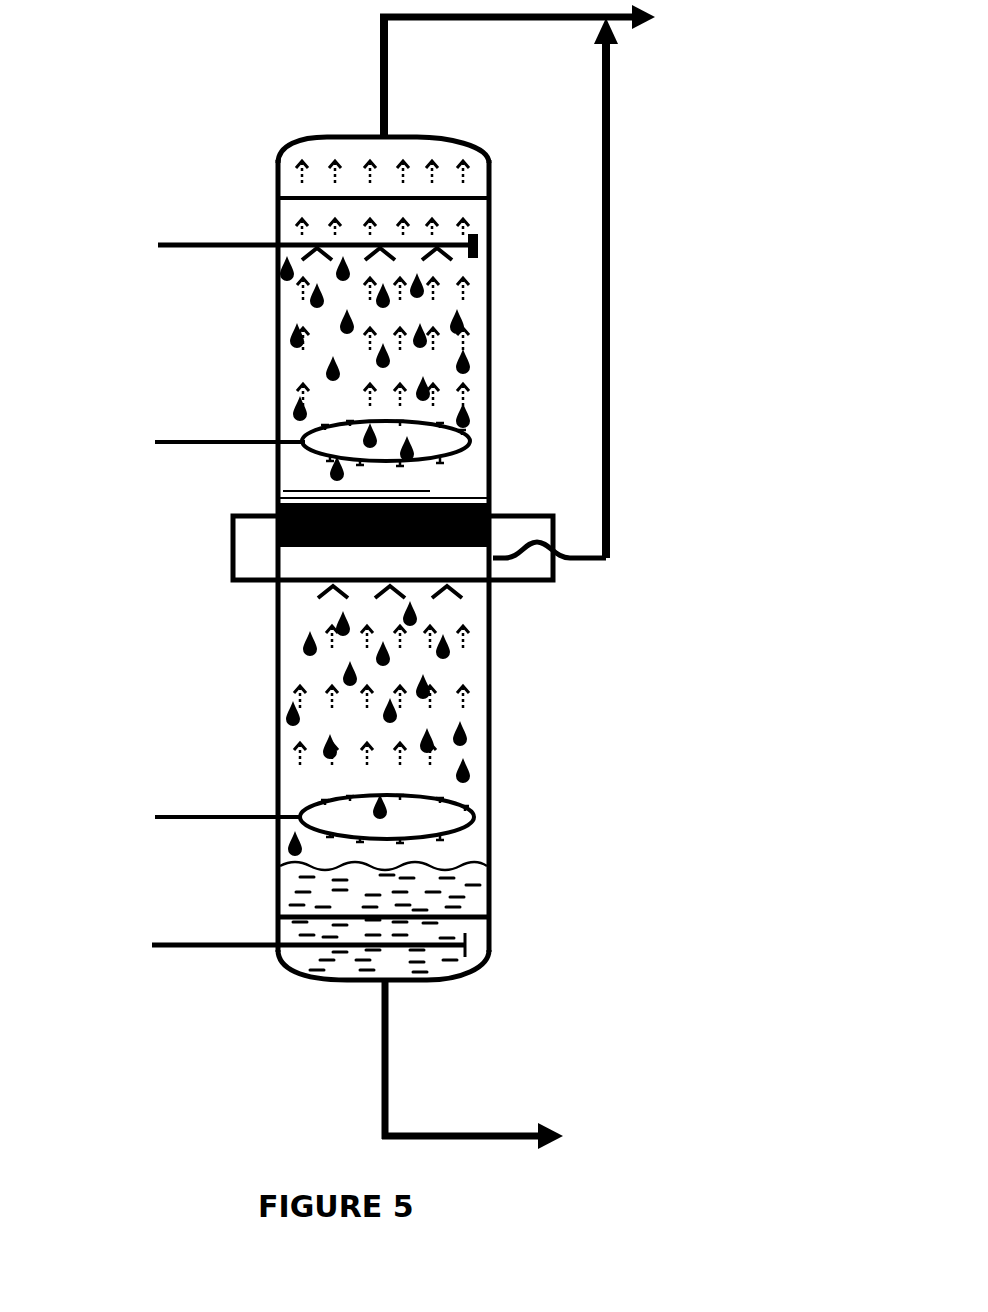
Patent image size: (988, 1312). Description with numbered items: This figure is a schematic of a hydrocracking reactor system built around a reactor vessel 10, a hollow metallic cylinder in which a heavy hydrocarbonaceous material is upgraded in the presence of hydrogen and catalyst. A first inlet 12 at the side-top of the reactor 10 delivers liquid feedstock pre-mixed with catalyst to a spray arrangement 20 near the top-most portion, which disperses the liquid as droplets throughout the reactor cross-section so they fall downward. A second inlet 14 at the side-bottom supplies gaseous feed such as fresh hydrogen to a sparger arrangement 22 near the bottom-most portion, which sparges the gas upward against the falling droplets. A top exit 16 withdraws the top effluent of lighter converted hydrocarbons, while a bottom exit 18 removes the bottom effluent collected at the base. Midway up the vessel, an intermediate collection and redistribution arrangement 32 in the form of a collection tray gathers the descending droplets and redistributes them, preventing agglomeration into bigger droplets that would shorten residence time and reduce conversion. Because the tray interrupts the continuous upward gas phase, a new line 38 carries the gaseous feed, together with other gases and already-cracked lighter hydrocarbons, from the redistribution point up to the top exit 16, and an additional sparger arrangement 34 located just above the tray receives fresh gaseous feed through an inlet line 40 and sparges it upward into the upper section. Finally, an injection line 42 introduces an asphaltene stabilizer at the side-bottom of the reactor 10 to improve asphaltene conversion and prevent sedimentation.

The reactor vessel 10 is at (205, 118).
The first inlet 12 is at (174, 242).
The second inlet 14 is at (199, 815).
The top exit 16 is at (381, 95).
The bottom exit 18 is at (381, 1015).
The spray arrangement 20 is at (479, 250).
The sparger arrangement 22 is at (470, 828).
The intermediate collection and redistribution arrangement 32 is at (443, 492).
The additional sparger arrangement 34 is at (462, 440).
The new line 38 is at (611, 530).
The upper liquid inlet 40 is at (180, 439).
The injection line 42 is at (184, 944).